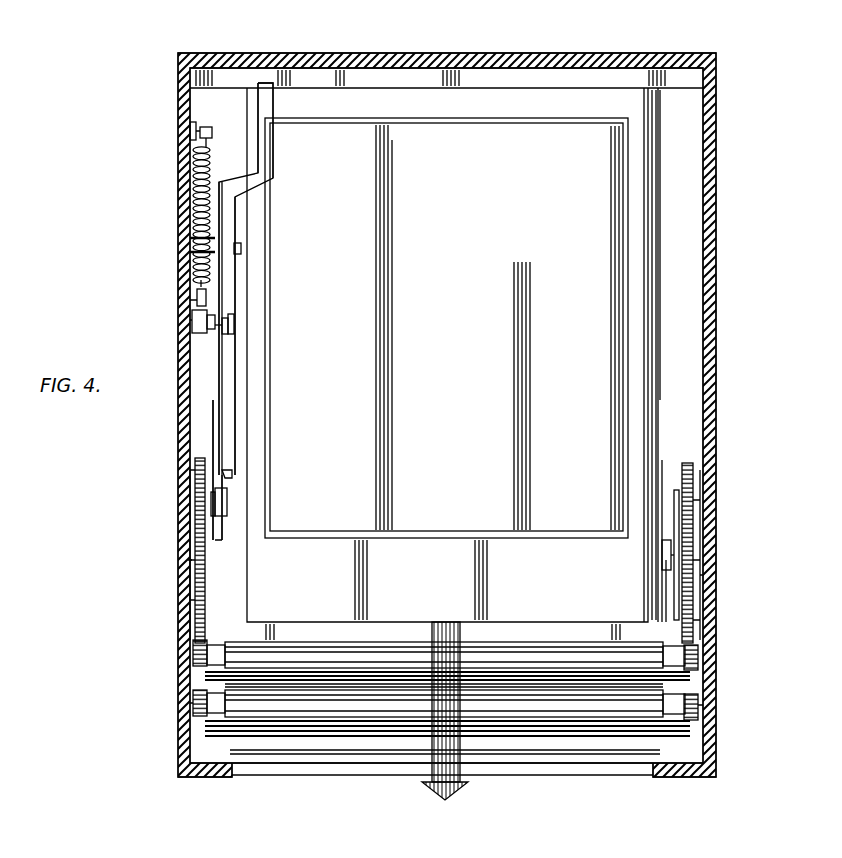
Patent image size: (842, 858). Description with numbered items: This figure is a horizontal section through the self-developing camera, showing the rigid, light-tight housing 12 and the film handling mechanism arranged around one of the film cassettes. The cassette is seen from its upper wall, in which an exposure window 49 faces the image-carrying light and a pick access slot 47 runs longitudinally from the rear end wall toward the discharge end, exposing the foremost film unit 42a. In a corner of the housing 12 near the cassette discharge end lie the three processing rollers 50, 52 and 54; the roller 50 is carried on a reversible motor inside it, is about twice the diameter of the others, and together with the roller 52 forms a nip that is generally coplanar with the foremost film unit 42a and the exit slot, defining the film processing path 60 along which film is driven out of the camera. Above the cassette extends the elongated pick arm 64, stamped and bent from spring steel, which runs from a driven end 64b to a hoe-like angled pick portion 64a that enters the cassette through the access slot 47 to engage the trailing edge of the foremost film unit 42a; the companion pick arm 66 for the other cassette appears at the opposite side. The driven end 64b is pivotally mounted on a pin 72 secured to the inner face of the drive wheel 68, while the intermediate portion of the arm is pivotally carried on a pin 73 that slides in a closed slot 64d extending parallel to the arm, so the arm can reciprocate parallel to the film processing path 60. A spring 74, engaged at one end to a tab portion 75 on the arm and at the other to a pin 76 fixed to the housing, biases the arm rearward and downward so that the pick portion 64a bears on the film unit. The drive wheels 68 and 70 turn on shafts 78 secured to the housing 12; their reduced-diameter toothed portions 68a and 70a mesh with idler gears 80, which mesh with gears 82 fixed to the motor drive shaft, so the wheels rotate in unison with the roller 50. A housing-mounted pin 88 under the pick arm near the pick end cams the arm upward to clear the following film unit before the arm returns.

The housing 12 is at (712, 248).
The pick access slot 47 is at (250, 76).
The exposure window 49 is at (470, 118).
The foremost film unit 42a is at (462, 349).
The pick arm 64 is at (197, 357).
The pick portion 64a is at (268, 83).
The driven end 64b is at (240, 528).
The closed slot 64d is at (222, 215).
The pick arm 66 is at (656, 602).
The drive wheel 68 is at (197, 490).
The toothed portion of reduced diameter 68a is at (233, 476).
The drive wheel 70 is at (695, 492).
The toothed portion of reduced diameter 70a is at (676, 505).
The pin 72 is at (228, 500).
The pin 73 is at (234, 327).
The spring 74 is at (205, 205).
The tab portion 75 is at (197, 298).
The pin 76 is at (207, 128).
The shaft 78 is at (186, 568).
The idler gear 80 is at (193, 650).
The gear 82 is at (190, 712).
The housing-mounted pin 88 is at (241, 250).
The processing roller 50 is at (360, 683).
The processing roller 52 is at (286, 712).
The processing roller 54 is at (300, 655).
The film processing path 60 is at (455, 790).